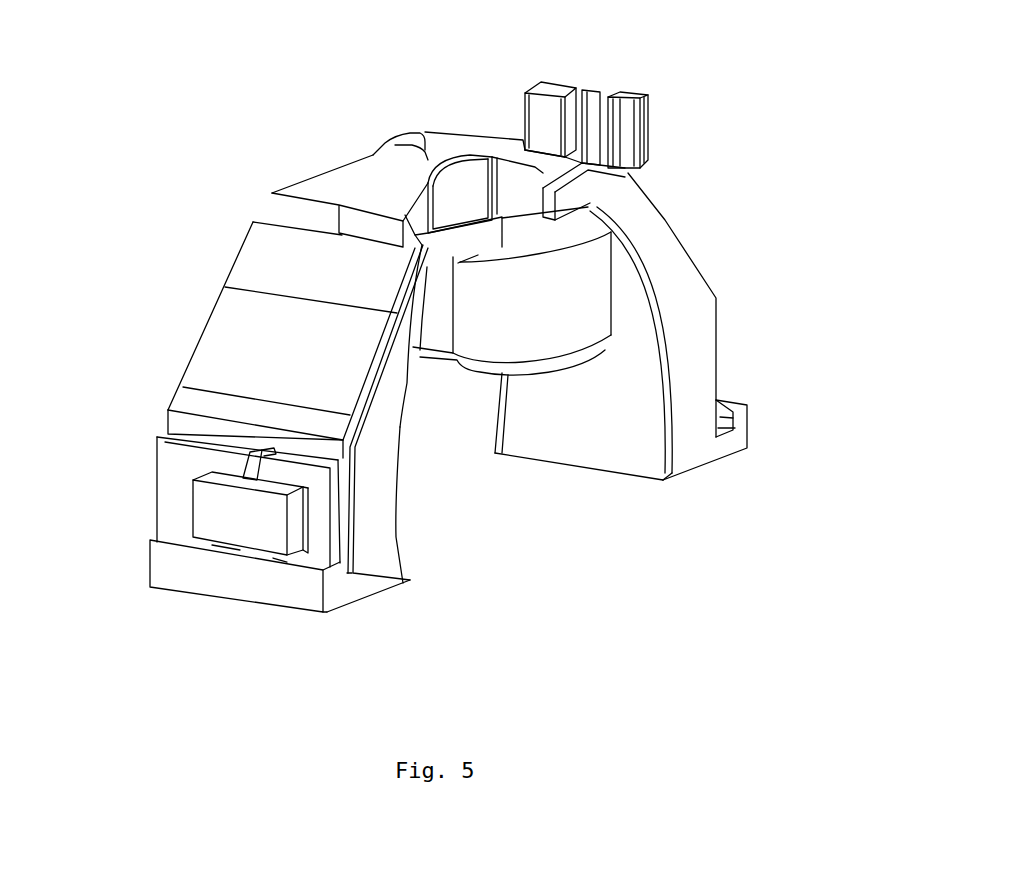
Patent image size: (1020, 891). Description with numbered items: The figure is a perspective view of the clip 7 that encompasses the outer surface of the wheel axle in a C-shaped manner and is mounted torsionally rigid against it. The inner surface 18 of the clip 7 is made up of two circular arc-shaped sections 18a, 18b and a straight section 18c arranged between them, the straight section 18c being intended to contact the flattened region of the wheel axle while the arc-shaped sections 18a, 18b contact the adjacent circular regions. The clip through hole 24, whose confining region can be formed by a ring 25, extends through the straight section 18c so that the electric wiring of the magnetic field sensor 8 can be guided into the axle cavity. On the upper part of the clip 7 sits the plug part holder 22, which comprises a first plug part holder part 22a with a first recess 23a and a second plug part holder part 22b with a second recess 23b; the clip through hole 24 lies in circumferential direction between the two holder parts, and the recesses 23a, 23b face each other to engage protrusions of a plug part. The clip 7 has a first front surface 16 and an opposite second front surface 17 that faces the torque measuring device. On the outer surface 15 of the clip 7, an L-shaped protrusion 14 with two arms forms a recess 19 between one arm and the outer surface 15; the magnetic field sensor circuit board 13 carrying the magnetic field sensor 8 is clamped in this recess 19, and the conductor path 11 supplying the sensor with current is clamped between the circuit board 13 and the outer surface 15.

The clip 7 is at (242, 145).
The magnetic field sensor 8 is at (190, 515).
The conductor path 11 is at (205, 321).
The magnetic field sensor circuit board 13 is at (156, 463).
The L-shaped protrusion 14 is at (328, 614).
The outer surface 15 is at (287, 212).
The first front surface 16 is at (422, 131).
The second front surface 17 is at (697, 345).
The inner surface 18 is at (633, 440).
The circular arc-shaped section 18a is at (400, 537).
The circular arc-shaped section 18b is at (667, 476).
The straight section 18c is at (460, 262).
The recess 19 is at (403, 580).
The plug part holder 22 is at (688, 124).
The first plug part holder part 22a is at (370, 157).
The second plug part holder part 22b is at (632, 95).
The first recess 23a is at (443, 136).
The second recess 23b is at (598, 100).
The clip through hole 24 is at (515, 238).
The ring 25 is at (518, 375).